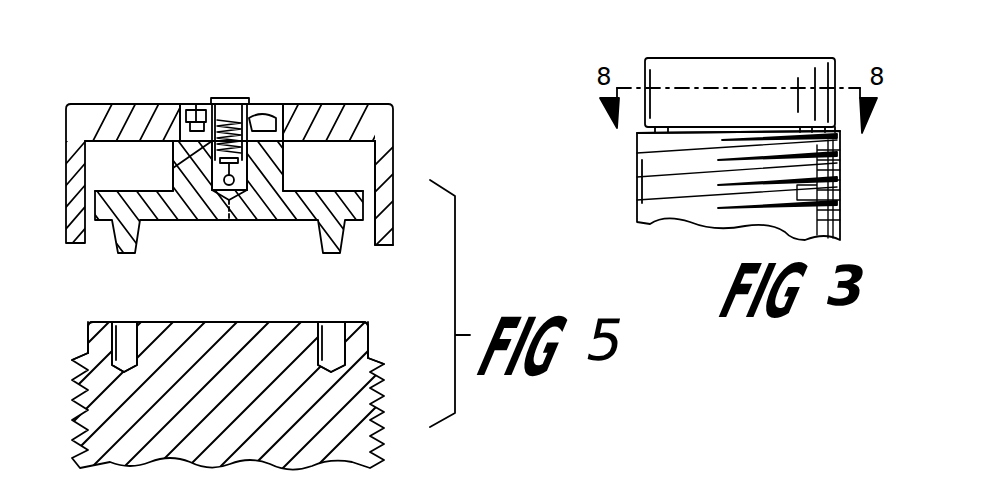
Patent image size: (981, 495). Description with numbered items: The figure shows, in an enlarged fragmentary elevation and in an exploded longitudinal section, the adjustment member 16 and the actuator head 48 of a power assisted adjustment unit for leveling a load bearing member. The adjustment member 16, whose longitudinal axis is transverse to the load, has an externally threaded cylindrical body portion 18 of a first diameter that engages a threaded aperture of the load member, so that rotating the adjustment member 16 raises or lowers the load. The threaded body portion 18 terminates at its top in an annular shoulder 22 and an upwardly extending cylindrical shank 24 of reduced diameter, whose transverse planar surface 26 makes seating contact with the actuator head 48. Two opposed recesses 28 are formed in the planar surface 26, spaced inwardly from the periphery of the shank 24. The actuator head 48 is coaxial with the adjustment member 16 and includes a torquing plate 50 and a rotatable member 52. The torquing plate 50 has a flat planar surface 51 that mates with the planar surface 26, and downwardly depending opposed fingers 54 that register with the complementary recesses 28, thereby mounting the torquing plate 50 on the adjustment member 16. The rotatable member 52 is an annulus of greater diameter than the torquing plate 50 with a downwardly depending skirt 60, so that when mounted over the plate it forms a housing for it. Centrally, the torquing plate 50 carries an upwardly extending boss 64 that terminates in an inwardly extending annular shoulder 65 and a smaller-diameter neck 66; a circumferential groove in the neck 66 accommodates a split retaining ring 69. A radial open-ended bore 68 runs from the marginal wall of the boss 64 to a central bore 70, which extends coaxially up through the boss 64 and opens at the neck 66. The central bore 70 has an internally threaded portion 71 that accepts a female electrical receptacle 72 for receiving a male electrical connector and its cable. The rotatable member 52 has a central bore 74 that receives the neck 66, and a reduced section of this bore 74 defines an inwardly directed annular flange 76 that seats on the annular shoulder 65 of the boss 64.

In FIG. 5, the adjustment member 16 is at (393, 438).
In FIG. 3, the adjustment member 16 is at (631, 186).
In FIG. 5, the externally threaded cylindrical body portion 18 is at (385, 397).
In FIG. 3, the externally threaded cylindrical body portion 18 is at (638, 168).
In FIG. 5, the annular shoulder 22 is at (88, 352).
In FIG. 5, the cylindrical shank 24 is at (370, 334).
In FIG. 5, the planar surface 26 is at (300, 322).
In FIG. 5, the recesses 28 is at (125, 330).
In FIG. 5, the actuator head 48 is at (389, 94).
In FIG. 3, the actuator head 48 is at (641, 64).
In FIG. 5, the torquing plate 50 is at (127, 193).
In FIG. 5, the planar surface 51 is at (247, 200).
In FIG. 5, the rotatable member 52 is at (110, 104).
In FIG. 3, the rotatable member 52 is at (837, 73).
In FIG. 5, the fingers 54 is at (135, 248).
In FIG. 5, the skirt 60 is at (393, 200).
In FIG. 5, the boss 64 is at (285, 183).
In FIG. 5, the annular shoulder 65 is at (318, 141).
In FIG. 5, the neck 66 is at (262, 120).
In FIG. 5, the radial open-ended bore 68 is at (265, 215).
In FIG. 5, the retaining ring 69 is at (224, 122).
In FIG. 5, the central bore 70 is at (235, 215).
In FIG. 5, the internally threaded portion 71 is at (183, 168).
In FIG. 5, the female electrical receptacle 72 is at (237, 100).
In FIG. 5, the bore 74 is at (200, 118).
In FIG. 5, the annular flange 76 is at (178, 144).